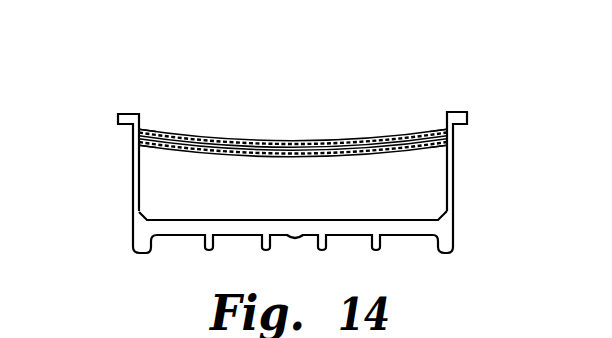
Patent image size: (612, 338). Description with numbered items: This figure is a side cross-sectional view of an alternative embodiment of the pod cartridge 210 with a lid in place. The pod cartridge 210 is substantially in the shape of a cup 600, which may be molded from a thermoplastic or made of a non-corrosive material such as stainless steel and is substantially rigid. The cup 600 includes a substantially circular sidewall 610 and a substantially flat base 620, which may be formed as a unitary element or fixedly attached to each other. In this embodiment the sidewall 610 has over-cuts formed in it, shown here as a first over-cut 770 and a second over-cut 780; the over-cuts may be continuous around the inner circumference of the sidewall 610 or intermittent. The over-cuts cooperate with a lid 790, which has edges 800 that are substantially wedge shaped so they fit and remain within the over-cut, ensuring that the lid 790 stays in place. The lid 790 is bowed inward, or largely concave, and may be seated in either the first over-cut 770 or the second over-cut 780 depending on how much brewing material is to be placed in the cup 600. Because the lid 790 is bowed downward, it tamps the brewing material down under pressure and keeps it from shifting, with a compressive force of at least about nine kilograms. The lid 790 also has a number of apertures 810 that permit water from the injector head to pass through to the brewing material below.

The pod cartridge 210 is at (252, 109).
The cup 600 is at (325, 181).
The sidewall 610 is at (452, 152).
The base 620 is at (453, 232).
The first over-cut 770 is at (445, 128).
The second over-cut 780 is at (447, 148).
The lid 790 is at (208, 134).
The edges 800 is at (152, 128).
The apertures 810 is at (228, 156).